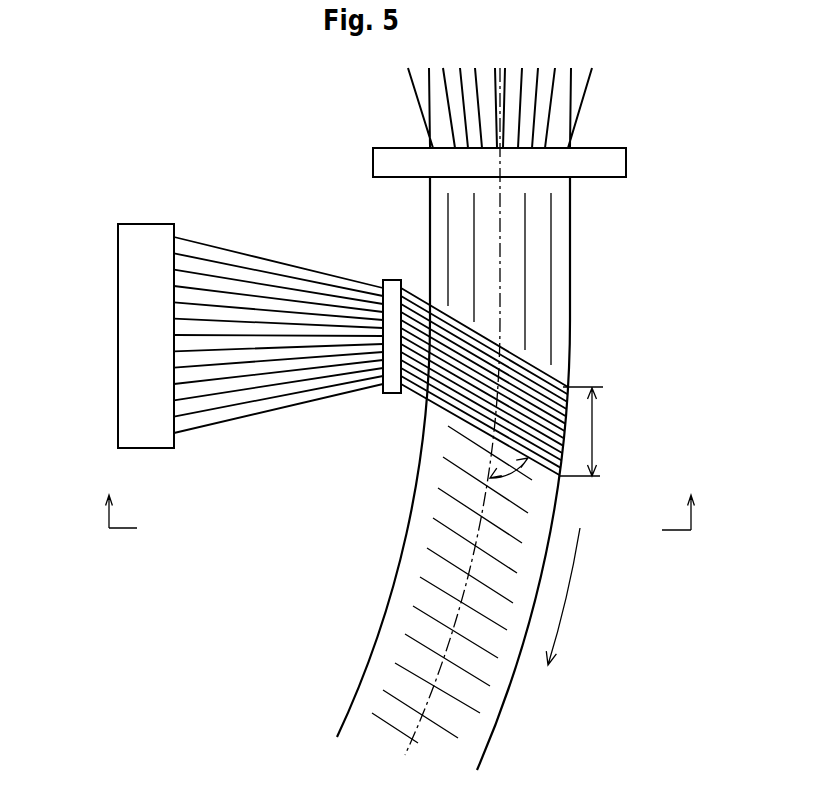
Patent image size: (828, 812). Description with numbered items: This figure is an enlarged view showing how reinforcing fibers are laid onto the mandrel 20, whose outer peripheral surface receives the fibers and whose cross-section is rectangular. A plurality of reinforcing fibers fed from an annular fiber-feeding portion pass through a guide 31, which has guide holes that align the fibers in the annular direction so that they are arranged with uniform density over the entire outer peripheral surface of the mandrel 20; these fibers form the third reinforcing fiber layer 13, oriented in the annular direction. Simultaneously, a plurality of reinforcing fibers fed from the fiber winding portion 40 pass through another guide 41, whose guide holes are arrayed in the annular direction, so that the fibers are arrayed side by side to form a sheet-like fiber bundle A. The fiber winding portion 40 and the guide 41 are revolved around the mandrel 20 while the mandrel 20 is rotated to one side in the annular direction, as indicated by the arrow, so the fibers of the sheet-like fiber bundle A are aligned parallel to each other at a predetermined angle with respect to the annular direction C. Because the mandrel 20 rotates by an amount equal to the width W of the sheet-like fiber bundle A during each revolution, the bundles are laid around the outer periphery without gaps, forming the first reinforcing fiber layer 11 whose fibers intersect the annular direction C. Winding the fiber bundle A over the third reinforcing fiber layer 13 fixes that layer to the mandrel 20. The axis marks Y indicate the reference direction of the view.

The guide 31 is at (614, 163).
The third reinforcing fiber layer 13 is at (525, 297).
The mandrel 20 is at (369, 629).
The annular direction C is at (418, 732).
The first reinforcing fiber layer 11 is at (447, 563).
The fiber winding portion 40 is at (131, 322).
The guide 41 is at (390, 394).
The sheet-like fiber bundle A is at (560, 371).
The width of the sheet-like fiber bundle W is at (598, 436).
The Y axis direction Y is at (398, 520).